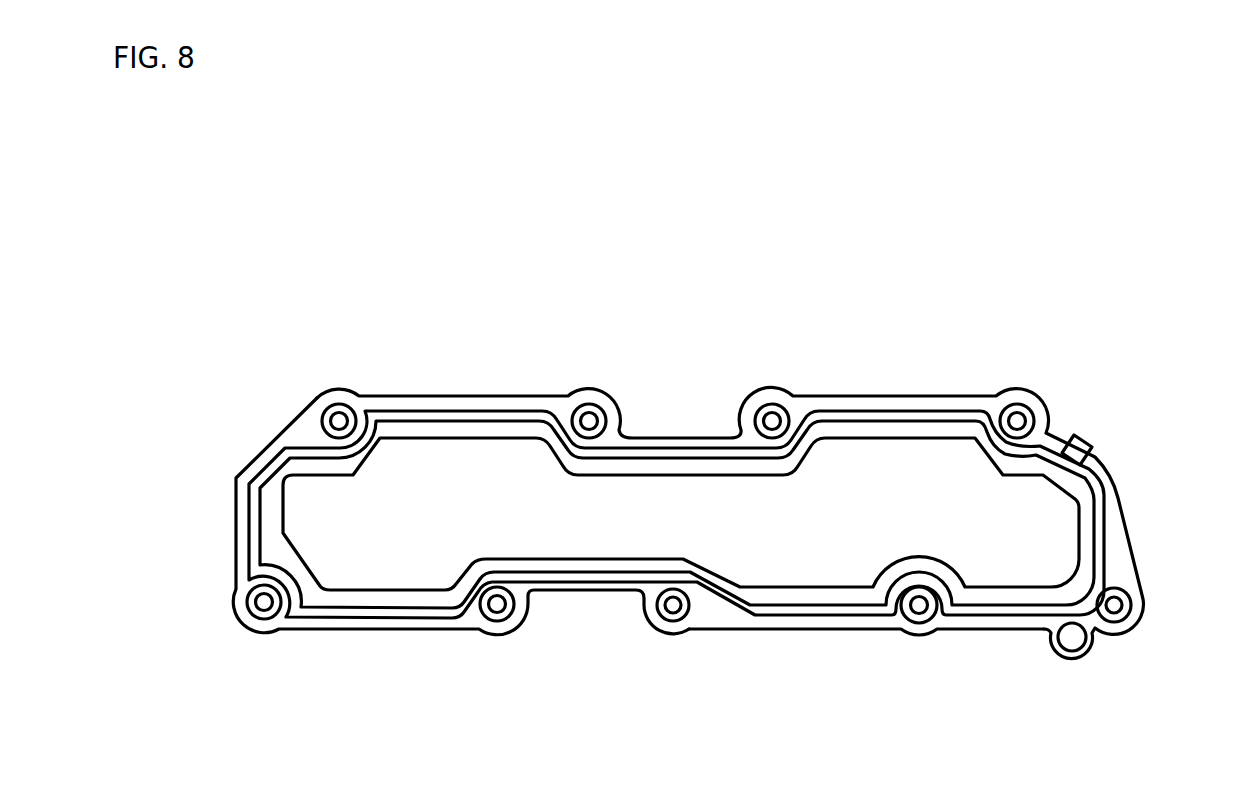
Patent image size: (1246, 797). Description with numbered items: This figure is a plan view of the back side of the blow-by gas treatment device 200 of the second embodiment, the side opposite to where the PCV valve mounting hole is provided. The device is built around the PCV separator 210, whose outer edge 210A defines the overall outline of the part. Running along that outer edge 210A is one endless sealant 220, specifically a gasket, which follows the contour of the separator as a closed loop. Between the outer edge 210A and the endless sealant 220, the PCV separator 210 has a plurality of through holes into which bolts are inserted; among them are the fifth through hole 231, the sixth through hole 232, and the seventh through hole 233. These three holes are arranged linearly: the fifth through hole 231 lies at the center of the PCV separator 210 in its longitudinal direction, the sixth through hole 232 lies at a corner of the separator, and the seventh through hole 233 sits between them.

The blow-by gas treatment device 200 is at (485, 304).
The PCV separator 210 is at (1037, 530).
The outer edge 210A is at (812, 630).
The endless sealant 220 is at (1007, 612).
The fifth through hole 231 is at (673, 605).
The sixth through hole 232 is at (1114, 605).
The seventh through hole 233 is at (919, 605).